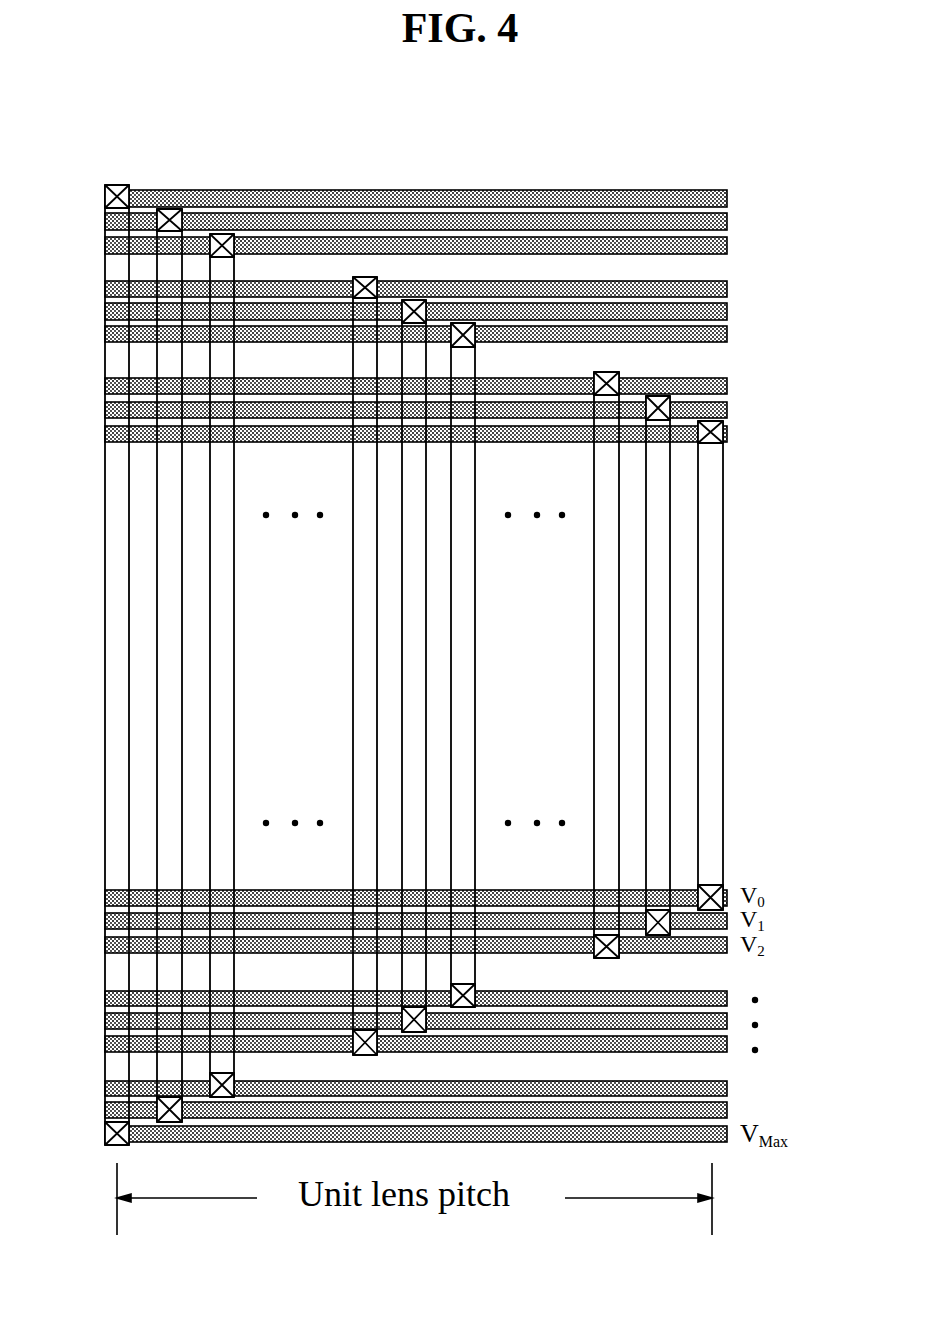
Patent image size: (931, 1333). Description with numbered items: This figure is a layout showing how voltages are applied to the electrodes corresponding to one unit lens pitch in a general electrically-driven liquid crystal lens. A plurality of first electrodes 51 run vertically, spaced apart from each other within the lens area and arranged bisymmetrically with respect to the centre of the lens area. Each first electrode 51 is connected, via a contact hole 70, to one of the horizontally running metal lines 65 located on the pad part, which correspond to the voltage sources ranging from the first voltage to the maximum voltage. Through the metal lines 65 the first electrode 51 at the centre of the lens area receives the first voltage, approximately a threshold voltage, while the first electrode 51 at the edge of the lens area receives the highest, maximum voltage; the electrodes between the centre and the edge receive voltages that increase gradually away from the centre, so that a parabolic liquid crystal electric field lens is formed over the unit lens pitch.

The contact hole 70 is at (724, 432).
The first electrode 51 is at (712, 685).
The metal line 65 is at (727, 1126).